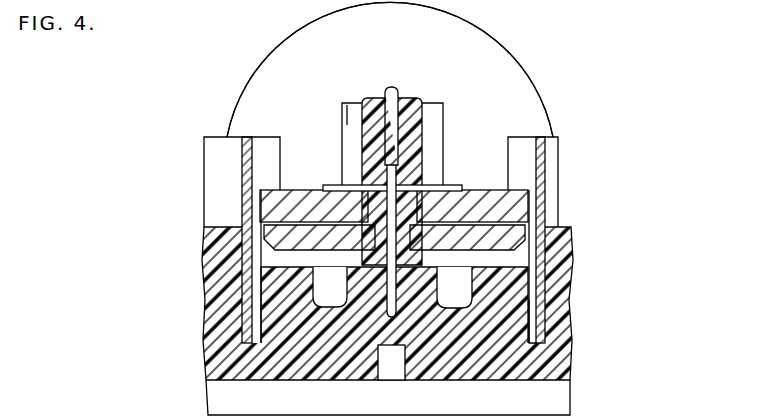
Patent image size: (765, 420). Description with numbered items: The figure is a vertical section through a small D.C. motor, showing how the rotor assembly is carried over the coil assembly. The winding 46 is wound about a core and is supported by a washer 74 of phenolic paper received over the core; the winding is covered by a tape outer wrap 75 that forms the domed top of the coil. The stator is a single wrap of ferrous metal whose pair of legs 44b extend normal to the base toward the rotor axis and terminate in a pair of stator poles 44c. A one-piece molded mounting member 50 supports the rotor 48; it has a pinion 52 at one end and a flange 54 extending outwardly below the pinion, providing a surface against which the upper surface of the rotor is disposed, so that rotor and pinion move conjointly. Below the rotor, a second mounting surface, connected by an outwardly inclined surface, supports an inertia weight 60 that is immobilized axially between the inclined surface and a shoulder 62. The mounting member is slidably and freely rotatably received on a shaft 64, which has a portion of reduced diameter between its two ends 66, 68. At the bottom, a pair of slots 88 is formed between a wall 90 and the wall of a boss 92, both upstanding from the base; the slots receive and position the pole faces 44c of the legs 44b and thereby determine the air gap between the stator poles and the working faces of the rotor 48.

The legs 44b is at (220, 176).
The stator poles 44c is at (248, 213).
The winding 46 is at (254, 64).
The rotor 48 is at (487, 197).
The mounting member 50 is at (415, 122).
The pinion 52 is at (431, 140).
The flange 54 is at (338, 188).
The inertia weight 60 is at (507, 239).
The shoulder 62 is at (405, 245).
The shaft 64 is at (401, 91).
The end 66 is at (378, 131).
The end 68 is at (342, 303).
The washer 74 is at (508, 100).
The tape outer wrap 75 is at (506, 50).
The slots 88 is at (534, 340).
The wall 90 is at (560, 287).
The boss 92 is at (295, 299).